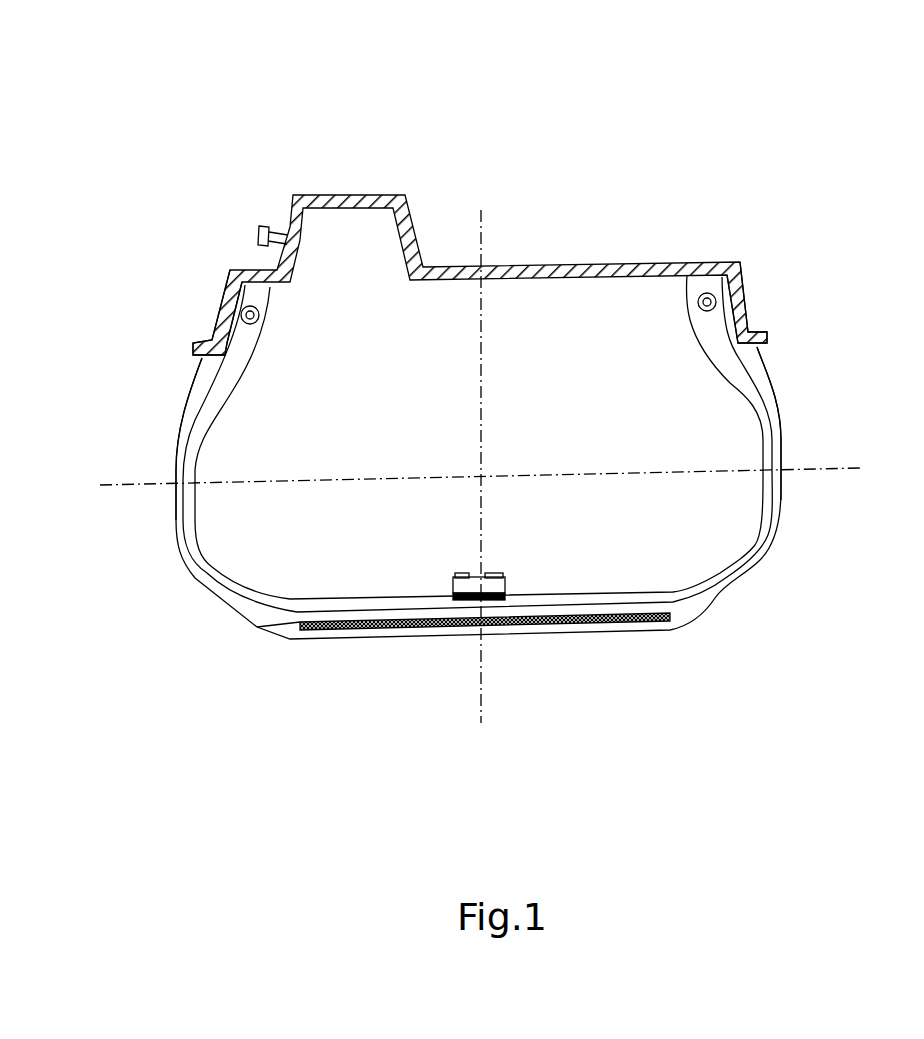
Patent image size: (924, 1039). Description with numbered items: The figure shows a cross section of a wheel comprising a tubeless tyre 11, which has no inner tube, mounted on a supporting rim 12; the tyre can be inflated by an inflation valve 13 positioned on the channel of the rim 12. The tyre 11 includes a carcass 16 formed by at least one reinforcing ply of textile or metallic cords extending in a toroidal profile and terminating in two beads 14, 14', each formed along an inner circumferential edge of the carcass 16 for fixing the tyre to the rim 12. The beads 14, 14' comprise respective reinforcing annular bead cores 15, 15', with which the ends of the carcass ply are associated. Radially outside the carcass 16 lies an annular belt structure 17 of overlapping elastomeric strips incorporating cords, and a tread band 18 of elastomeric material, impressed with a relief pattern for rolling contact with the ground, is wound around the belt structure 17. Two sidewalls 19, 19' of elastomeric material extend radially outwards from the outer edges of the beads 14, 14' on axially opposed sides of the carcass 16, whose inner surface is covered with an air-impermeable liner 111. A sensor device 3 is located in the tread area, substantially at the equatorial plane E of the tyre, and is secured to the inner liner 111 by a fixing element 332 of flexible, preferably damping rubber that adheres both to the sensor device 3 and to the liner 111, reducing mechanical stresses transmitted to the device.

The sensor device 3 is at (492, 573).
The tyre 11 is at (750, 573).
The supporting rim 12 is at (440, 268).
The inflation valve 13 is at (273, 233).
The bead 14 is at (178, 309).
The bead 14' is at (821, 302).
The bead core 15 is at (310, 340).
The bead core 15' is at (647, 334).
The carcass 16 is at (207, 557).
The belt structure 17 is at (257, 627).
The tread band 18 is at (543, 627).
The sidewall 19 is at (117, 439).
The sidewall 19' is at (840, 423).
The liner 111 is at (423, 595).
The fixing element 332 is at (468, 600).
The equatorial plane E is at (483, 313).